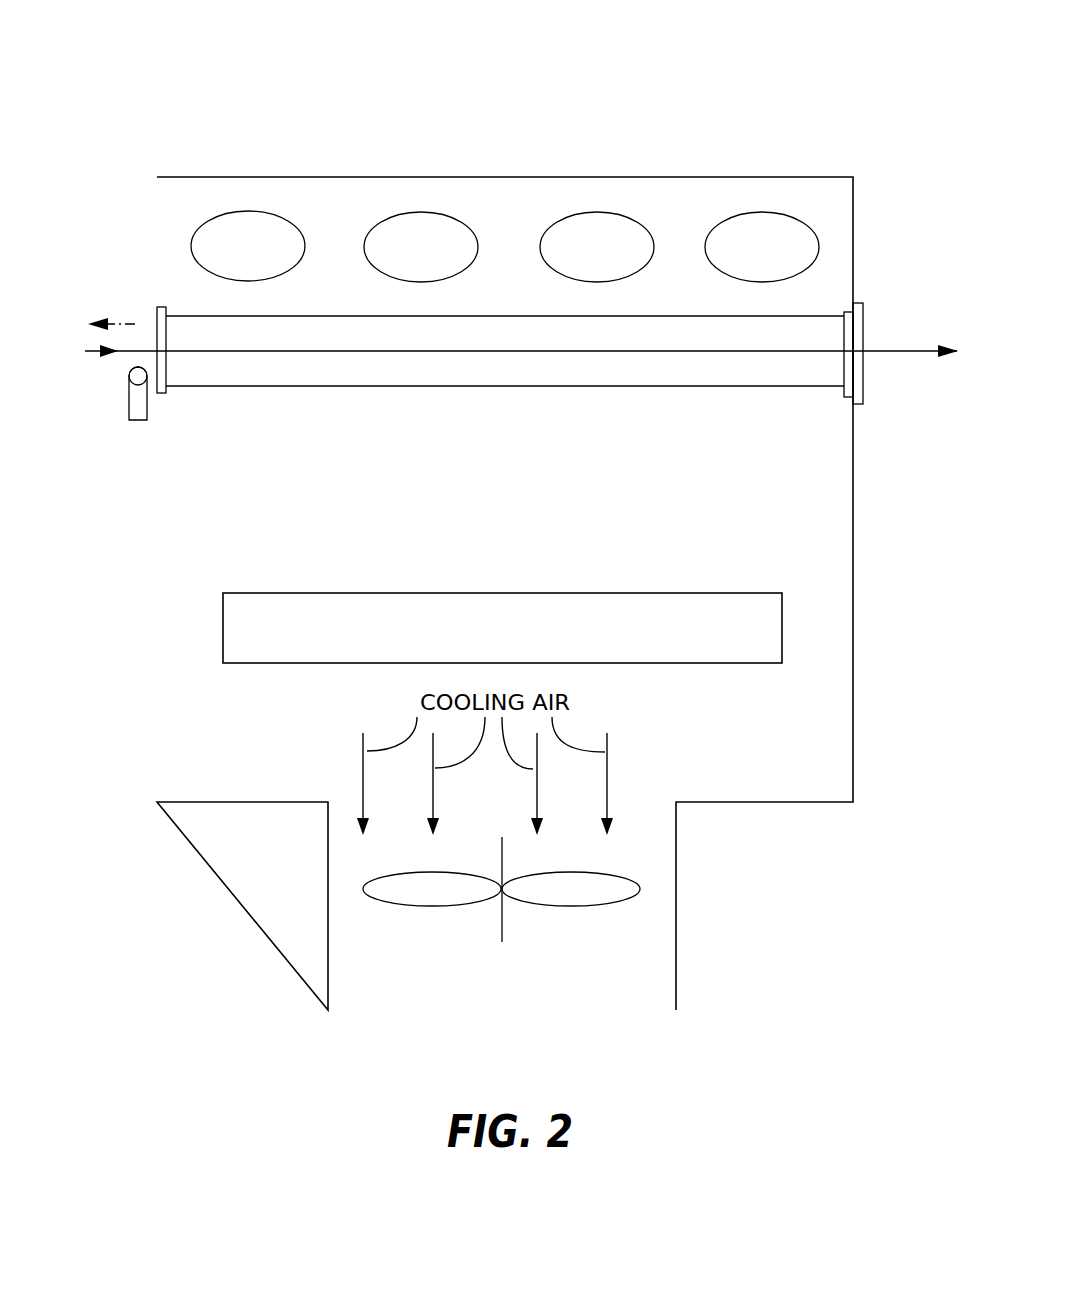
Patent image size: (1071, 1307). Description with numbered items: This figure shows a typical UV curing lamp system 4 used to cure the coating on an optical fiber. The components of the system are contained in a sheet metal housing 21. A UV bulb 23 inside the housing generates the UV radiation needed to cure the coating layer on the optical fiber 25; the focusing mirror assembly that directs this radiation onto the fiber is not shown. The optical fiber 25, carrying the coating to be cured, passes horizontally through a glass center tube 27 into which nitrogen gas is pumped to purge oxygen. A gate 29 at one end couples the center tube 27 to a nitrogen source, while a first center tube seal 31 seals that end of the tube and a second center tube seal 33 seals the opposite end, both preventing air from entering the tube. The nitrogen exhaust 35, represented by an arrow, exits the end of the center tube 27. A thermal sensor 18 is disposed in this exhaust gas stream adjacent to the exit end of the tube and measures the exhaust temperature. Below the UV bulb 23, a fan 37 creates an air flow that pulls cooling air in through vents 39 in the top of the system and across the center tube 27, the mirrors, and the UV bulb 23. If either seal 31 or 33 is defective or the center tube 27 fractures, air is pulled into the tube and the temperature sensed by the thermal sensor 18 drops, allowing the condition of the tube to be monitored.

The UV curing lamp system 4 is at (797, 66).
The thermal sensor 18 is at (128, 402).
The sheet metal housing 21 is at (852, 563).
The UV bulb 23 is at (537, 593).
The optical fiber 25 is at (138, 352).
The glass center tube 27 is at (505, 387).
The gate 29 is at (862, 403).
The first center tube seal 31 is at (843, 400).
The second center tube seal 33 is at (167, 365).
The nitrogen exhaust 35 is at (118, 302).
The fan 37 is at (458, 930).
The vents 39 is at (422, 213).